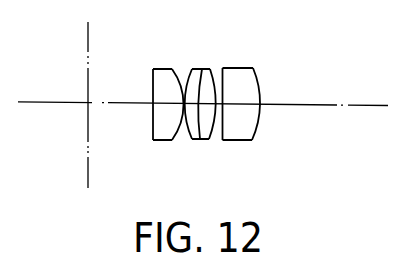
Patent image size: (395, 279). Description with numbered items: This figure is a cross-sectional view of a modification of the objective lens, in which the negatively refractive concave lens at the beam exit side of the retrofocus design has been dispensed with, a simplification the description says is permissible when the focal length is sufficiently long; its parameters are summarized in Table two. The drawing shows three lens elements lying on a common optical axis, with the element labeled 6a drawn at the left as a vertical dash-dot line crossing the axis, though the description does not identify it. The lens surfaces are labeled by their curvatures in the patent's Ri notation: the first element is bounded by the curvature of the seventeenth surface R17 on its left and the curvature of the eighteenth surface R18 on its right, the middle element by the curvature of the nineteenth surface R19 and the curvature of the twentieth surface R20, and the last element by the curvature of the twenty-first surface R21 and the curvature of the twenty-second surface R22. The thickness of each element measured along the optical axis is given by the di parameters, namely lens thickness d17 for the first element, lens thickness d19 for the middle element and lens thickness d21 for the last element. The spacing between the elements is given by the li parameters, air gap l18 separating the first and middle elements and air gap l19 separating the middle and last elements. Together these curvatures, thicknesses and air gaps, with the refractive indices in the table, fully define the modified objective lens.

The aperture stop / diaphragm plane 6a is at (88, 104).
The air gap l18 is at (177, 69).
The air gap l19 is at (213, 68).
The lens thickness d17 is at (165, 102).
The lens thickness d19 is at (202, 69).
The lens thickness d21 is at (250, 104).
The curvature of the seventeenth surface R17 is at (153, 124).
The curvature of the eighteenth surface R18 is at (170, 140).
The curvature of the nineteenth surface R19 is at (192, 139).
The curvature of the twentieth surface R20 is at (210, 121).
The curvature of the twenty-first surface R21 is at (222, 131).
The curvature of the twenty-second surface R22 is at (259, 131).